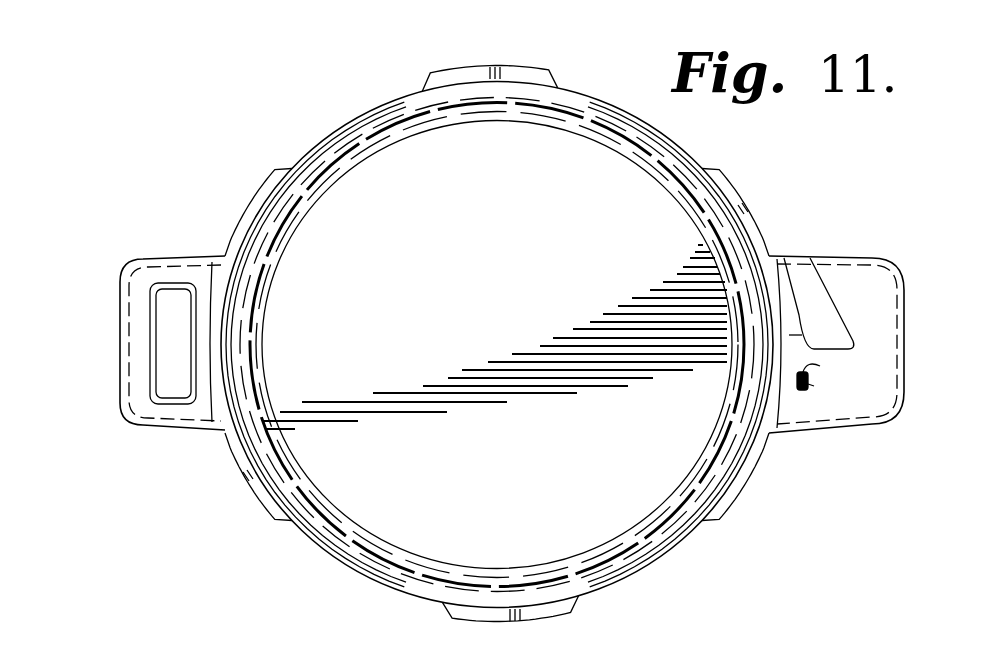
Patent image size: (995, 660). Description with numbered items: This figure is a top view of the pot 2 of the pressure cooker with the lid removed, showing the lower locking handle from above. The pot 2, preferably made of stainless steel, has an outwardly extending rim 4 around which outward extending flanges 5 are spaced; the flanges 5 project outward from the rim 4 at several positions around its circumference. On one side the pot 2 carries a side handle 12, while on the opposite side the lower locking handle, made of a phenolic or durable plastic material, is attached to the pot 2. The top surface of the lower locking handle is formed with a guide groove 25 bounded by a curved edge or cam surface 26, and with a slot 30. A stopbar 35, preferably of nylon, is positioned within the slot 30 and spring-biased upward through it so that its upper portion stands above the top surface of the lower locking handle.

The pot 2 is at (620, 106).
The rim 4 is at (371, 112).
The outward extending flanges 5 is at (492, 66).
The side handle 12 is at (121, 336).
The guide groove 25 is at (819, 303).
The curved edge or cam surface 26 is at (792, 276).
The slot 30 is at (815, 376).
The stopbar 35 is at (814, 386).